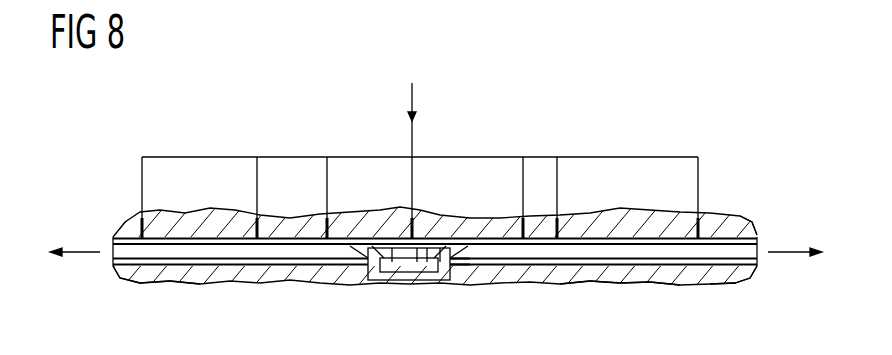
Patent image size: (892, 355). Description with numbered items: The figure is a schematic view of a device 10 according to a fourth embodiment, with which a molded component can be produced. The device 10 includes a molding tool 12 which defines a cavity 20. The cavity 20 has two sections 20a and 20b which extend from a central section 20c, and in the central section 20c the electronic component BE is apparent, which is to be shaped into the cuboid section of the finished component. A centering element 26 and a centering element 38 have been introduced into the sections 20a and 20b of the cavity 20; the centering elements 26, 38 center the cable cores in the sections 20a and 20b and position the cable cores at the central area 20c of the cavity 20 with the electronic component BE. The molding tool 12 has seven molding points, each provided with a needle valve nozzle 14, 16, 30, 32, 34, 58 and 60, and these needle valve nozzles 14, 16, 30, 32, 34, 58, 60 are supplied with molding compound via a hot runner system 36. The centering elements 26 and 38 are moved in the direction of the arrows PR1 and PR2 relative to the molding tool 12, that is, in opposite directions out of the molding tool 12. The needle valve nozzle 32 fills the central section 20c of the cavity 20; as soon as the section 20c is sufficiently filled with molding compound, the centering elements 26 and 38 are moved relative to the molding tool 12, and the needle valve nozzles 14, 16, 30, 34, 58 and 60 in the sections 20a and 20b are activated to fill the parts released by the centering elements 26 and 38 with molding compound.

The device 10 is at (733, 80).
The molding tool 12 is at (453, 273).
The needle valve nozzle 14 is at (121, 176).
The needle valve nozzle 16 is at (280, 175).
The cavity 20 is at (435, 291).
The section of the cavity 20a is at (650, 304).
The section of the cavity 20b is at (170, 301).
The central section of the cavity 20c is at (492, 296).
The centering element 26 is at (723, 298).
The needle valve nozzle 30 is at (349, 175).
The needle valve nozzle 32 is at (430, 160).
The needle valve nozzle 34 is at (545, 175).
The hot runner system 36 is at (420, 128).
The centering element 38 is at (122, 297).
The needle valve nozzle 58 is at (580, 175).
The needle valve nozzle 60 is at (719, 176).
The electronic component BE is at (409, 292).
The arrow PR1 is at (795, 225).
The arrow PR2 is at (82, 225).